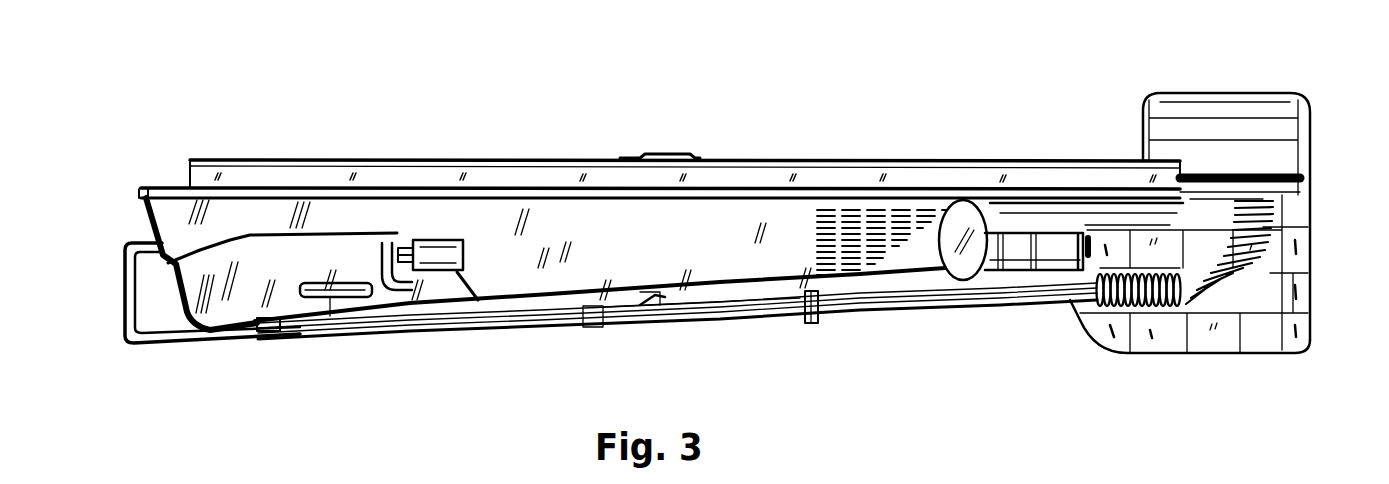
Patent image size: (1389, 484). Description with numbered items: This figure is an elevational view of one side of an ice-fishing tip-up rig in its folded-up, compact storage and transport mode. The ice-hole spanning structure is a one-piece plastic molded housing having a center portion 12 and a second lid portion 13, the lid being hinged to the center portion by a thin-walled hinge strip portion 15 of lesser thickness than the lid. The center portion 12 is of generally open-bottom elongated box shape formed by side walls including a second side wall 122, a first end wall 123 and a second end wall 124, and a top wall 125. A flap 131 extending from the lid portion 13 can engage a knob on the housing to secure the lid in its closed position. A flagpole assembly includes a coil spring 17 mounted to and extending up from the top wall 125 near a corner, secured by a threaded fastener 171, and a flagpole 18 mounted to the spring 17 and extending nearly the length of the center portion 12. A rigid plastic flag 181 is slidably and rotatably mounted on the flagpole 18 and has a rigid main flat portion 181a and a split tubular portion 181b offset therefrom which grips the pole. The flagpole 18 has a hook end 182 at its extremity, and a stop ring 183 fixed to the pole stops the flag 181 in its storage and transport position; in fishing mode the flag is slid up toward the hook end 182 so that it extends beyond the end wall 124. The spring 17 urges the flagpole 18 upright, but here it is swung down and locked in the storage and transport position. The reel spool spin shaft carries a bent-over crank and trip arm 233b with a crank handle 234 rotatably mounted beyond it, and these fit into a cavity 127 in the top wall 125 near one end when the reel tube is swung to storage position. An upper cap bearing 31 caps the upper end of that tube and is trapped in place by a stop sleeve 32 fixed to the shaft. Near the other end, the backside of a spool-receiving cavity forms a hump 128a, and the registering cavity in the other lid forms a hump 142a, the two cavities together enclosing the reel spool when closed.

The center portion 12 is at (1007, 192).
The second lid portion 13 is at (743, 159).
The hinge strip portion 15 is at (833, 180).
The coil spring 17 is at (1273, 222).
The flagpole 18 is at (987, 307).
The upper cap bearing 31 is at (457, 257).
The stop sleeve 32 is at (410, 247).
The second side wall 122 is at (550, 222).
The first end wall 123 is at (1308, 268).
The second end wall 124 is at (147, 215).
The top wall 125 is at (872, 278).
The cavity 127 is at (247, 283).
The hump 128a is at (1205, 355).
The flap 131 is at (628, 156).
The hump 142a is at (1240, 93).
The threaded fastener 171 is at (1255, 183).
The flag 181 is at (660, 297).
The main flat portion 181a is at (517, 303).
The split tubular portion 181b is at (630, 327).
The hook end 182 is at (125, 295).
The stop ring 183 is at (810, 323).
The crank and trip arm 233b is at (393, 243).
The crank handle 234 is at (330, 293).